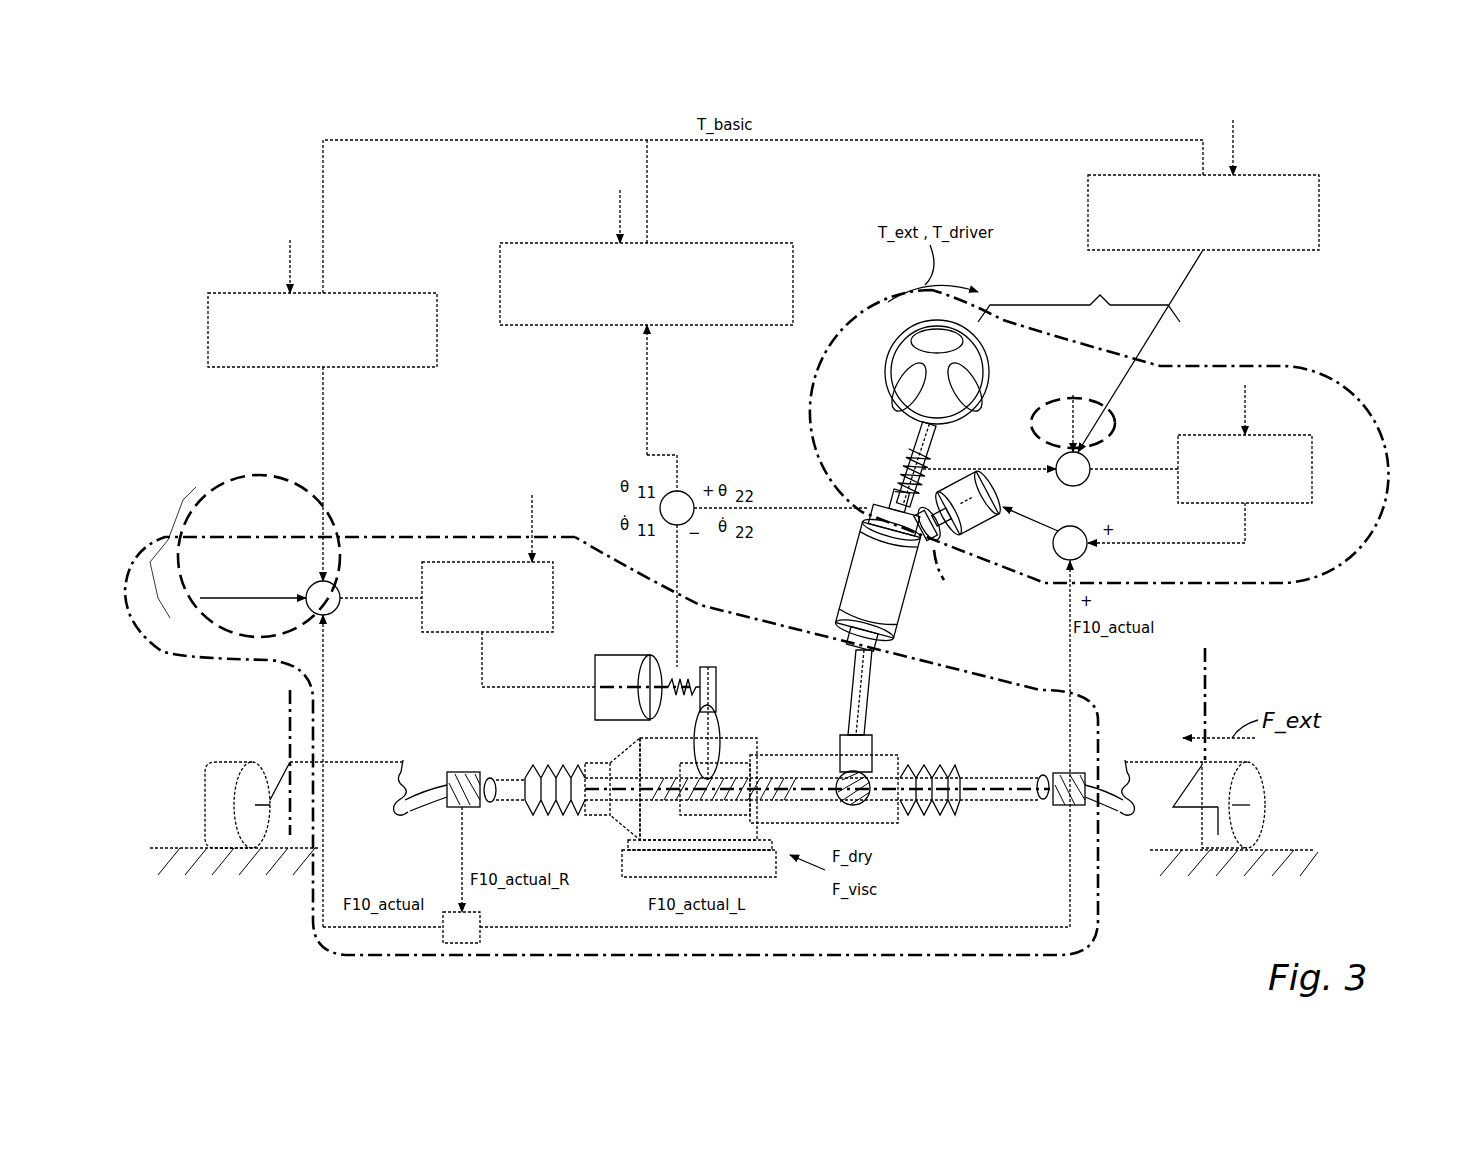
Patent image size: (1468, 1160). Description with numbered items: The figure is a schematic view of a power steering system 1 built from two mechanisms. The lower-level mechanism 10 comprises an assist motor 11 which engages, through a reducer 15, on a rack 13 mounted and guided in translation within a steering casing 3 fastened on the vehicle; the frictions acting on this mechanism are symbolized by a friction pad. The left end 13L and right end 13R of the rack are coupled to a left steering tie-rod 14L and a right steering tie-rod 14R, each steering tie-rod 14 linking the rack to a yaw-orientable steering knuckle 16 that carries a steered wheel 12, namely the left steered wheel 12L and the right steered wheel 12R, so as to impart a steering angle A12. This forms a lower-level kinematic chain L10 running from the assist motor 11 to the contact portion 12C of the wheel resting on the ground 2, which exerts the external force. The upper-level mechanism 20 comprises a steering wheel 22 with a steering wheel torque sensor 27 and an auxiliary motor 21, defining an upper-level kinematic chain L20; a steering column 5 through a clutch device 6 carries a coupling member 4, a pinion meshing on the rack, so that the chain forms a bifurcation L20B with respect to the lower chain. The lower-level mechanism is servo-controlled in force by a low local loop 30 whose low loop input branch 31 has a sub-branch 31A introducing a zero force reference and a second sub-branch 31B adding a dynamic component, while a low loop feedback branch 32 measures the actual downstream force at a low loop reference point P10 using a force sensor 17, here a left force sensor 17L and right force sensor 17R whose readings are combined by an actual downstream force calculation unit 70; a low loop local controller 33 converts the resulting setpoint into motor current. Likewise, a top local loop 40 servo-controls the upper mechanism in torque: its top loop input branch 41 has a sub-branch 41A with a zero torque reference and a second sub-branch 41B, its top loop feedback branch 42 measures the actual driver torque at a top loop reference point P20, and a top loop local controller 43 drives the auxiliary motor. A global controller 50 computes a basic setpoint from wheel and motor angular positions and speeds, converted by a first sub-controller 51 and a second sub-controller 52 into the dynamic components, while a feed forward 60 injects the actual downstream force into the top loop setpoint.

The power steering system 1 is at (252, 160).
The ground 2 is at (150, 850).
The steering casing 3 is at (630, 815).
The coupling member 4 is at (840, 770).
The steering column 5 is at (858, 700).
The clutch device 6 is at (870, 585).
The lower-level mechanism 10 is at (752, 665).
The assist motor 11 is at (625, 665).
The steered wheel 12 is at (733, 748).
The right steered wheel 12R is at (222, 785).
The left steered wheel 12L is at (1250, 790).
The contact portion 12C is at (215, 840).
The rack 13 is at (952, 818).
The right end of the rack 13R is at (490, 778).
The left end of the rack 13L is at (1043, 776).
The steering tie-rod 14 is at (770, 814).
The right steering tie-rod 14R is at (445, 785).
The left steering tie-rod 14L is at (1120, 805).
The reducer 15 is at (718, 745).
The steering knuckle 16 is at (380, 762).
The right force sensor 17R is at (455, 808).
The left force sensor 17L is at (1082, 805).
The force sensor 17 is at (782, 864).
The upper-level mechanism 20 is at (1000, 575).
The auxiliary motor 21 is at (977, 518).
The steering wheel 22 is at (890, 388).
The steering wheel torque sensor 27 is at (897, 490).
The low local loop 30 is at (160, 652).
The low loop input branch 31 is at (276, 476).
The sub-branch of the low loop input branch 31A is at (233, 596).
The second sub-branch of the low loop input branch 31B is at (333, 390).
The low loop feedback branch 32 is at (408, 956).
The low loop local controller 33 is at (450, 634).
The top local loop 40 is at (1375, 418).
The top loop input branch 41 is at (1030, 425).
The sub-branch of the top loop input branch 41A is at (1110, 410).
The second sub-branch of the top loop input branch 41B is at (1200, 258).
The top loop feedback branch 42 is at (1012, 480).
The top loop local controller 43 is at (1312, 470).
The global controller 50 is at (500, 260).
The first sub-controller 51 is at (208, 318).
The second sub-controller 52 is at (1320, 208).
The feed forward 60 is at (1078, 683).
The actual downstream force calculation unit 70 is at (461, 927).
The top loop reference point P20 is at (902, 455).
The upper-level kinematic chain L20 is at (958, 573).
The bifurcation L20B is at (875, 702).
The low loop reference point P10 is at (1062, 815).
The lower-level kinematic chain L10 is at (985, 800).
The steering angle A12 is at (300, 700).